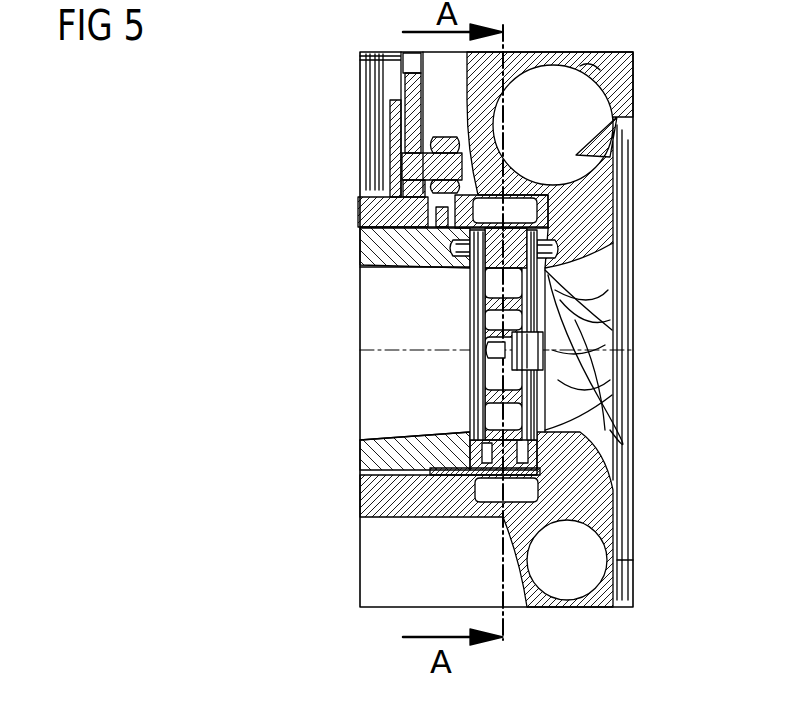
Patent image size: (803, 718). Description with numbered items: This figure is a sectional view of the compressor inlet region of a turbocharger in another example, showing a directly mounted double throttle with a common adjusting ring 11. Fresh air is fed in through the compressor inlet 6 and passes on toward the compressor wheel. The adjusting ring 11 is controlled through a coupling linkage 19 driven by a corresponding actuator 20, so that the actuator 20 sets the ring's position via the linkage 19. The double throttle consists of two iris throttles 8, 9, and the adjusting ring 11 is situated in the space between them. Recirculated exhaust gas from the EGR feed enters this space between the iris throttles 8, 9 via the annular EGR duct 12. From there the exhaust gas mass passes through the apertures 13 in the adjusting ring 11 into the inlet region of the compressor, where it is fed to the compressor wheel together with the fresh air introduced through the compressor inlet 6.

The actuator 20 is at (412, 88).
The coupling linkage 19 is at (438, 188).
The adjusting ring 11 is at (478, 262).
The compressor inlet 6 is at (390, 290).
The apertures 13 is at (480, 330).
The iris throttle 8 is at (470, 422).
The annular EGR duct 12 is at (490, 492).
The iris throttle 9 is at (533, 282).